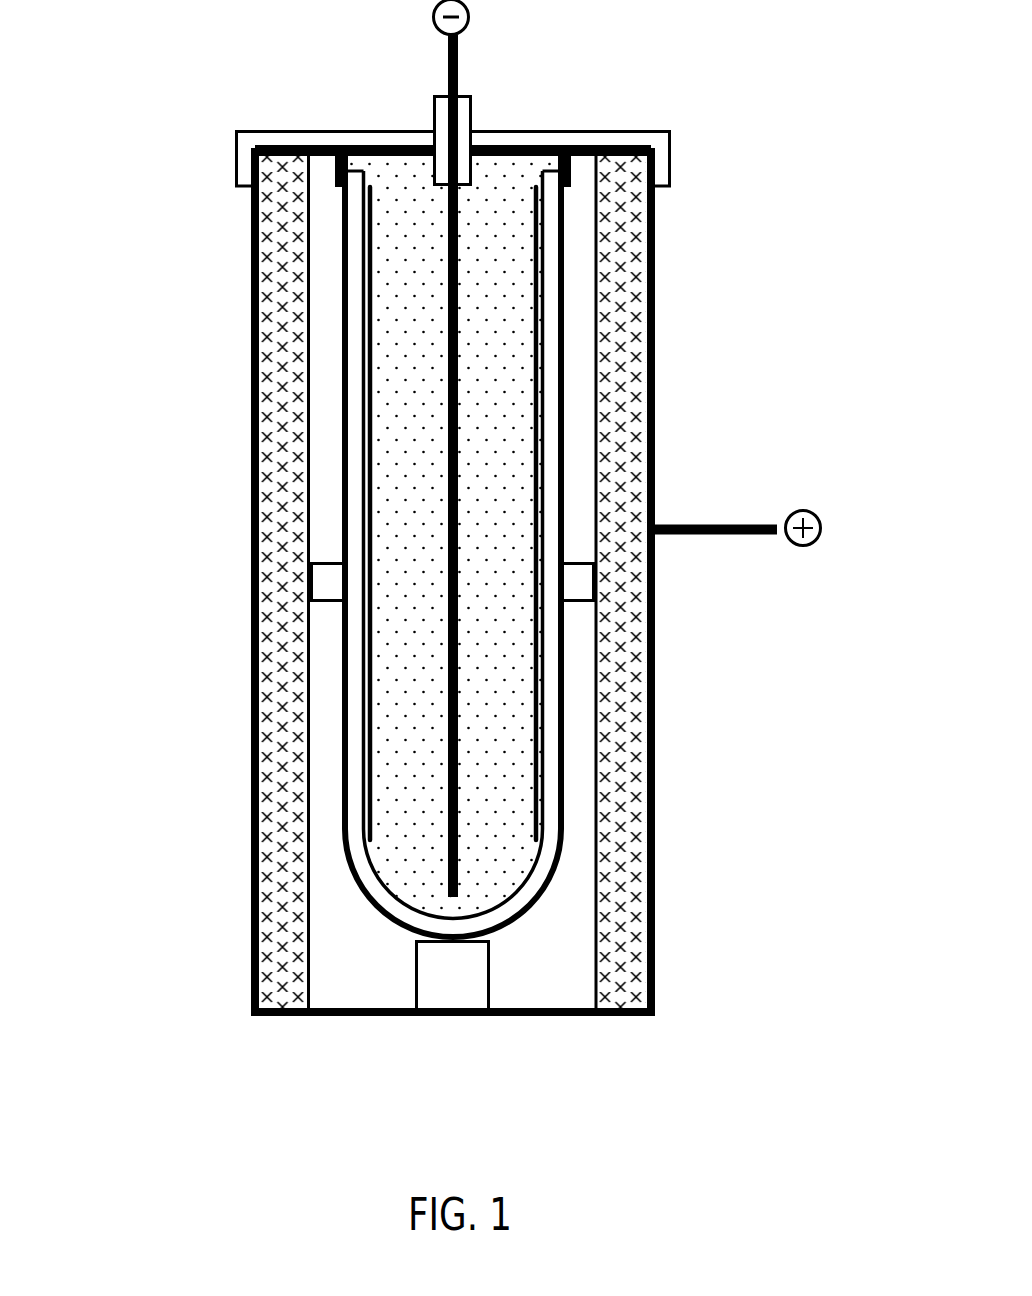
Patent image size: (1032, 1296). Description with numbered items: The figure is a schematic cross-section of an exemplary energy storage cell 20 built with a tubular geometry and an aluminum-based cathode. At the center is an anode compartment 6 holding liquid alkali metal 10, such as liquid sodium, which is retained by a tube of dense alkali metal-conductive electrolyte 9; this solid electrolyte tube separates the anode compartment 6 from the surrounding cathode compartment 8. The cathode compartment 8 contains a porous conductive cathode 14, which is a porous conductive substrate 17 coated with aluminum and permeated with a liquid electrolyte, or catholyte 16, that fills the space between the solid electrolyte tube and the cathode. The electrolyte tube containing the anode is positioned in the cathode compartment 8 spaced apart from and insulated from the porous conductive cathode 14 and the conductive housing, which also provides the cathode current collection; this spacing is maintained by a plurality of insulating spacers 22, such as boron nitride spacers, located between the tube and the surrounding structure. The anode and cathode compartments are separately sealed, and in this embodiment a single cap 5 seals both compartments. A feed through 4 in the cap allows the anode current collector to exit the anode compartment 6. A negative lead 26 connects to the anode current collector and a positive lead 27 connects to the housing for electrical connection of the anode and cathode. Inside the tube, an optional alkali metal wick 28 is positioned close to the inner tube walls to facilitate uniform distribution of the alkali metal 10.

The feed through 4 is at (462, 117).
The cap 5 is at (248, 140).
The anode compartment 6 is at (407, 193).
The cathode compartment 8 is at (538, 985).
The dense alkali metal-conductive electrolyte 9 is at (552, 718).
The liquid alkali metal 10 is at (497, 240).
The porous conductive cathode 14 is at (620, 850).
The liquid electrolyte (catholyte) 16 is at (578, 422).
The porous conductive substrate 17 is at (620, 943).
The energy storage cell 20 is at (660, 105).
The insulating spacers 22 is at (320, 583).
The negative lead 26 is at (469, 15).
The positive lead 27 is at (818, 541).
The alkali metal wick 28 is at (538, 352).